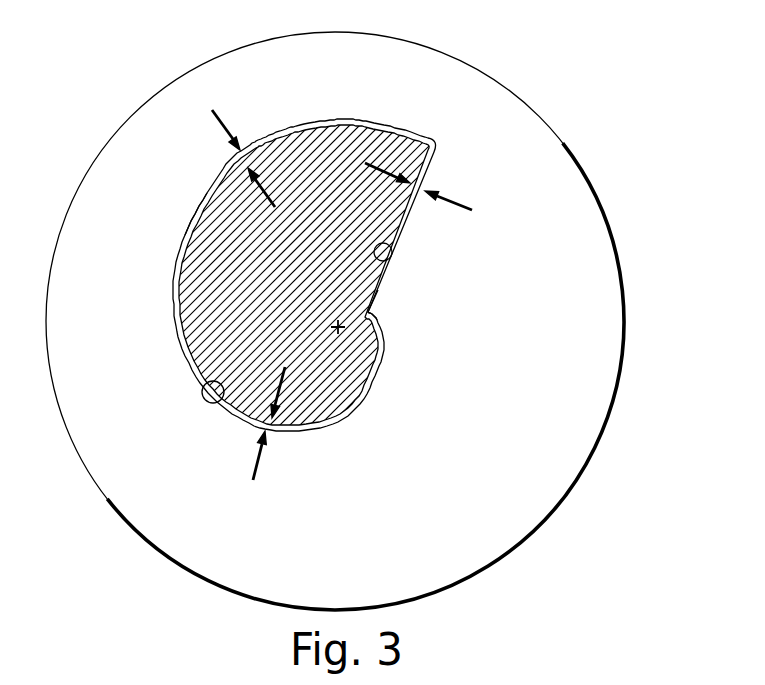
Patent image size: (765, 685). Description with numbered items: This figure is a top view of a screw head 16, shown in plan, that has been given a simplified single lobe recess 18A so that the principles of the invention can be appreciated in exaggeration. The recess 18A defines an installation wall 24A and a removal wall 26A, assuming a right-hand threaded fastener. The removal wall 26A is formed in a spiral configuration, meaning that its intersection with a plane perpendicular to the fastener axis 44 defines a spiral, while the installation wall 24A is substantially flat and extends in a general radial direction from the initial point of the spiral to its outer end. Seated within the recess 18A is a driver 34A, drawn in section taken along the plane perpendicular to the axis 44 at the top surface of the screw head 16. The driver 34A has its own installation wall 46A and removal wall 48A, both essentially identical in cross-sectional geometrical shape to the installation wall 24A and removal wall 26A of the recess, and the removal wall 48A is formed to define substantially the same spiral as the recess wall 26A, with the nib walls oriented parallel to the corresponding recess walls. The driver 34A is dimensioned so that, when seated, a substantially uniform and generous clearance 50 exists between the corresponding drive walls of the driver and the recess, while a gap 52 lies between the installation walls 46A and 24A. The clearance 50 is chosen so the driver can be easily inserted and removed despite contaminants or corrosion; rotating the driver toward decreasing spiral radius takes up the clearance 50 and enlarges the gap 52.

The screw head 16 is at (594, 318).
The single lobe recess 18A is at (343, 143).
The installation wall 24A is at (392, 249).
The removal wall 26A is at (203, 388).
The driver 34A is at (247, 271).
The fastener axis 44 is at (345, 333).
The installation wall 46A is at (372, 298).
The removal wall 48A is at (198, 214).
The clearance 50 is at (236, 132).
The gap 52 is at (473, 208).